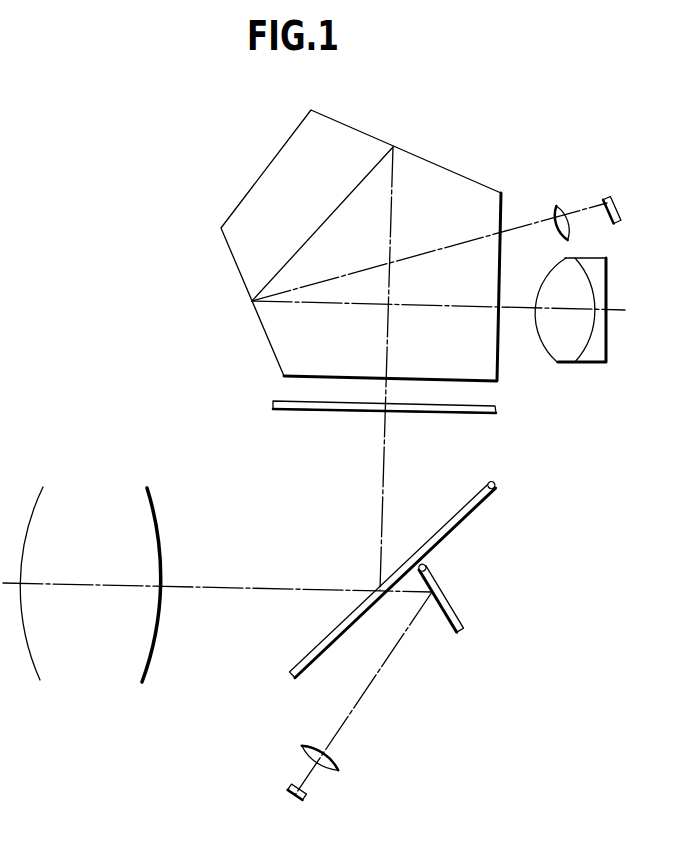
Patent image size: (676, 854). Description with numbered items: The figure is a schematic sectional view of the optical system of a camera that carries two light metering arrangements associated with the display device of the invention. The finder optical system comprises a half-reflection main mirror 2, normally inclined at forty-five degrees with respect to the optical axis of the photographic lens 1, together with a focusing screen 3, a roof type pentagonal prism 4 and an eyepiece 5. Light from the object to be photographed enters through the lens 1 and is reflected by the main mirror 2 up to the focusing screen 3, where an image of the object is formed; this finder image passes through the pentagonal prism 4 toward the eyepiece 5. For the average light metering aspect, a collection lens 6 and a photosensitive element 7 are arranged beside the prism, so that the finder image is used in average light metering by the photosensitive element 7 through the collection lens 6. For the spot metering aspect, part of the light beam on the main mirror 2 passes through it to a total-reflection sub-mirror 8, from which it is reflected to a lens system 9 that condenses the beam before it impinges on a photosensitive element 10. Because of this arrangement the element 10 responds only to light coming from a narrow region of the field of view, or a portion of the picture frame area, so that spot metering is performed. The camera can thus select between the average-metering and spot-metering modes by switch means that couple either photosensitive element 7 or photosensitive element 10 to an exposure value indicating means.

The photographic lens 1 is at (102, 665).
The half-reflection main mirror 2 is at (470, 517).
The focusing screen 3 is at (497, 408).
The roof type pentagonal prism 4 is at (363, 131).
The eyepiece 5 is at (607, 279).
The collection lens 6 is at (565, 205).
The photosensitive element 7 is at (613, 198).
The total-reflection sub-mirror 8 is at (462, 620).
The lens system 9 is at (342, 772).
The photosensitive element 10 is at (307, 798).